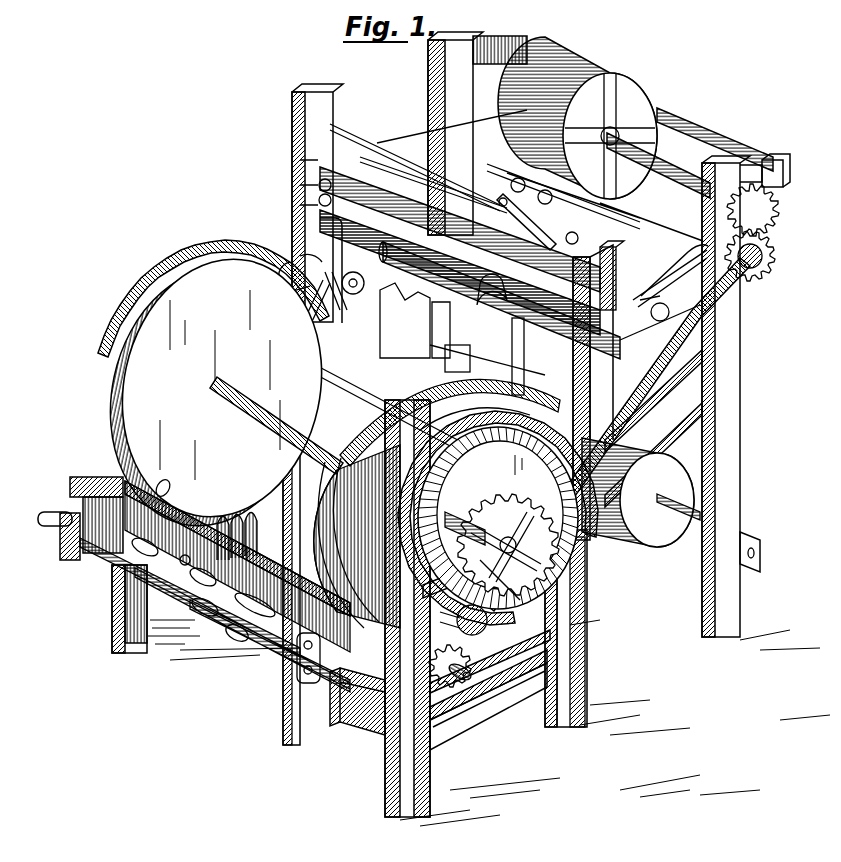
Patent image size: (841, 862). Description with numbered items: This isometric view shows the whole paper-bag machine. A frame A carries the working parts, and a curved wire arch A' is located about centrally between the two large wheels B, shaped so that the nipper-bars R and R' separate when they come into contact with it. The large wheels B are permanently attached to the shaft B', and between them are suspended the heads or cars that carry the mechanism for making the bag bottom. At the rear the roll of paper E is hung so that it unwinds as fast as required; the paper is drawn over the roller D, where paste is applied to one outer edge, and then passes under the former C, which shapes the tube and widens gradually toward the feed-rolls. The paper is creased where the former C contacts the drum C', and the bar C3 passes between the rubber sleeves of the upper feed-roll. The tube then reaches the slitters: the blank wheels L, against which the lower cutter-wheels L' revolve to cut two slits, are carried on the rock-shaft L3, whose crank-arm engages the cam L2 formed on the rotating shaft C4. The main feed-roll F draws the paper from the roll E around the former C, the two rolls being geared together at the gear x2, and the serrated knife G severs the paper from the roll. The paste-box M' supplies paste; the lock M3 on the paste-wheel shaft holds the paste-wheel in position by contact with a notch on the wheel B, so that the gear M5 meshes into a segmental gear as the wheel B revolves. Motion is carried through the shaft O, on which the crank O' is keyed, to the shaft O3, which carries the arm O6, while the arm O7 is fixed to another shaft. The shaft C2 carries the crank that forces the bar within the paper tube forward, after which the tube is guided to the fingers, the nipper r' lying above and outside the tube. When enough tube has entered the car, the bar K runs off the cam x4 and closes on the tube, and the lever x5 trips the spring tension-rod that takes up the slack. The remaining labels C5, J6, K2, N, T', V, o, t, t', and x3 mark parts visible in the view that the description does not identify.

The frame A is at (566, 628).
The curved wire arch A' is at (296, 600).
The large wheel B is at (342, 446).
The shaft B' is at (276, 425).
The former C is at (544, 207).
The drum C' is at (577, 117).
The shaft C2 is at (658, 165).
The bar C3 is at (660, 329).
The rotating shaft C4 is at (502, 545).
The pinion C5 is at (483, 620).
The roller D is at (715, 139).
The roll of paper E is at (641, 492).
The main feed-roll F is at (526, 222).
The serrated cutting-knife G is at (439, 301).
The hook J6 is at (290, 299).
The bar K is at (353, 268).
The comb K2 is at (237, 542).
The slitter blank wheel L is at (500, 193).
The lower cutter-wheel L' is at (645, 312).
The cam L2 is at (637, 421).
The rock-shaft L3 is at (622, 273).
The paste-box M' is at (495, 365).
The lock M3 is at (469, 664).
The gear M5 is at (467, 672).
The bracket N is at (298, 581).
The shaft O is at (663, 312).
The crank O' is at (753, 210).
The shaft O3 is at (215, 613).
The arm O6 is at (308, 658).
The arm O7 is at (199, 564).
The nipper-bar R is at (336, 280).
The nipper-bar R' is at (422, 306).
The roller T' is at (470, 263).
The shaft V is at (500, 580).
The hole o is at (754, 555).
The nipper r' is at (376, 367).
The rod t is at (674, 269).
The rod t' is at (377, 167).
The gear x2 is at (297, 183).
The band x3 is at (439, 503).
The cam x4 is at (242, 320).
The lever x5 is at (475, 417).